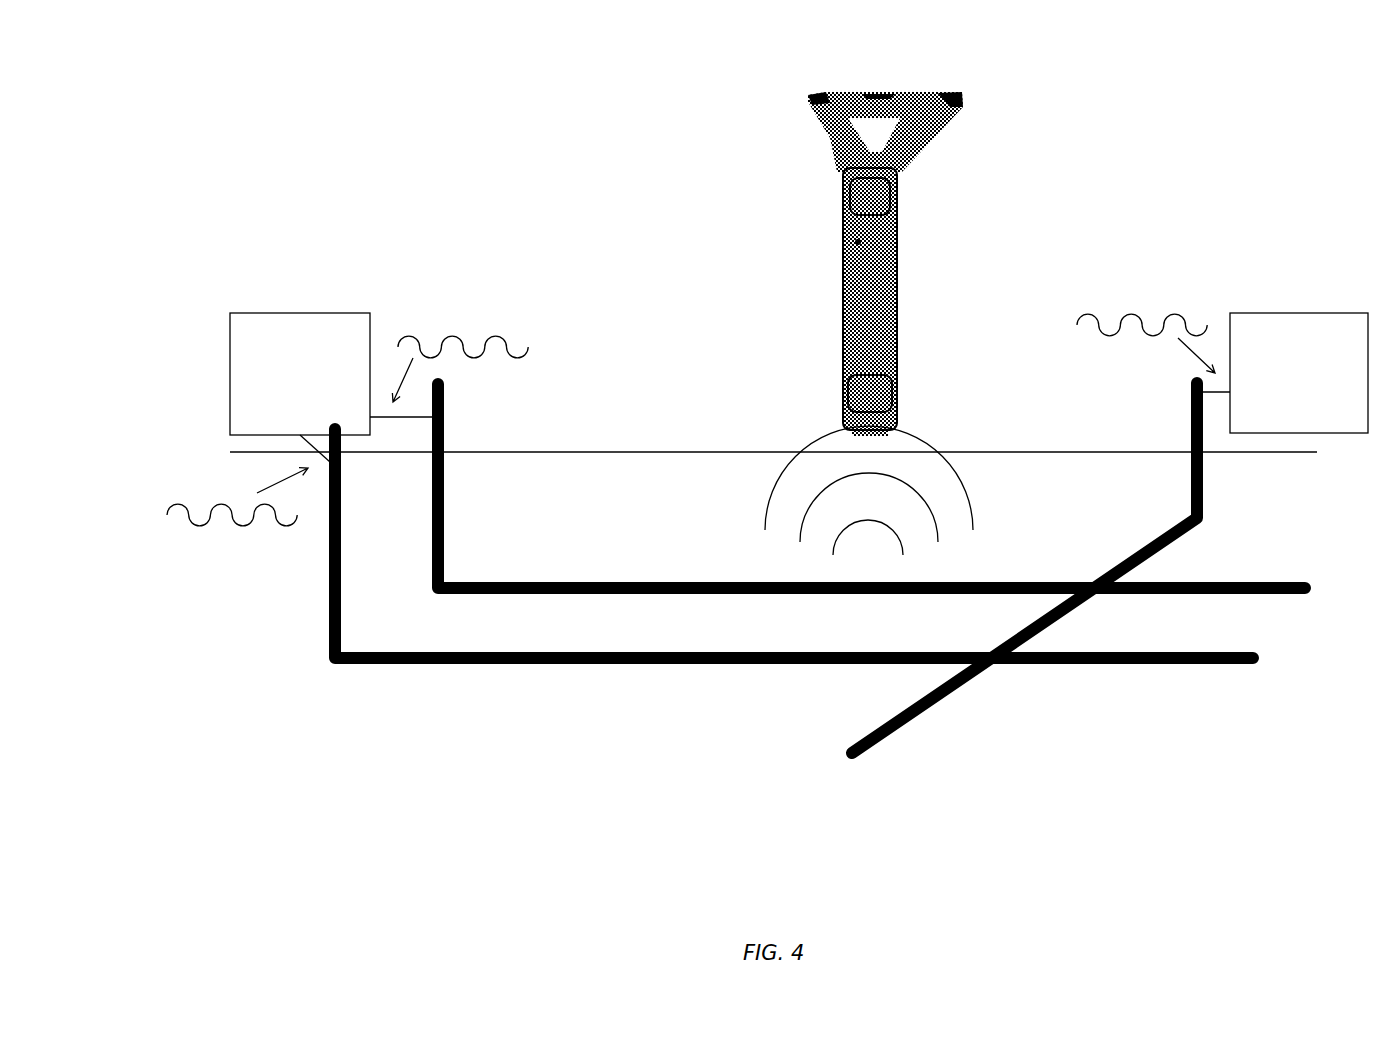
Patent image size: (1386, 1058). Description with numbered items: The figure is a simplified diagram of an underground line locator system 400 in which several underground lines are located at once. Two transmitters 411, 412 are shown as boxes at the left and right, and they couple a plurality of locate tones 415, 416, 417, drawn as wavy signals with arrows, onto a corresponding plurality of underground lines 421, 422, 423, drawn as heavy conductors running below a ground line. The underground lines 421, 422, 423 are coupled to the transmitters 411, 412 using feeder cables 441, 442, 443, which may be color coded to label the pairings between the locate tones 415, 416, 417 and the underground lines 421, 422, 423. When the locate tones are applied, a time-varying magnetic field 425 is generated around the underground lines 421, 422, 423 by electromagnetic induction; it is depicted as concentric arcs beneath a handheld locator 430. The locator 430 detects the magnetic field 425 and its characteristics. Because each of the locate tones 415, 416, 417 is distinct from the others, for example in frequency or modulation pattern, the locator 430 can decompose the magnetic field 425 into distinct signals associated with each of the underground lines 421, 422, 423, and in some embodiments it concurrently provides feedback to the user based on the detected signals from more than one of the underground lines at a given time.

The underground line locator system 400 is at (252, 78).
The transmitter 411 is at (282, 387).
The transmitter 412 is at (1280, 386).
The locate tone 415 is at (472, 313).
The locate tone 416 is at (205, 545).
The locate tone 417 is at (1147, 297).
The underground line 421 is at (542, 562).
The underground line 422 is at (487, 640).
The underground line 423 is at (953, 710).
The time-varying magnetic field 425 is at (748, 512).
The locator 430 is at (963, 93).
The feeder cable 441 is at (403, 422).
The feeder cable 442 is at (343, 447).
The feeder cable 443 is at (1217, 403).